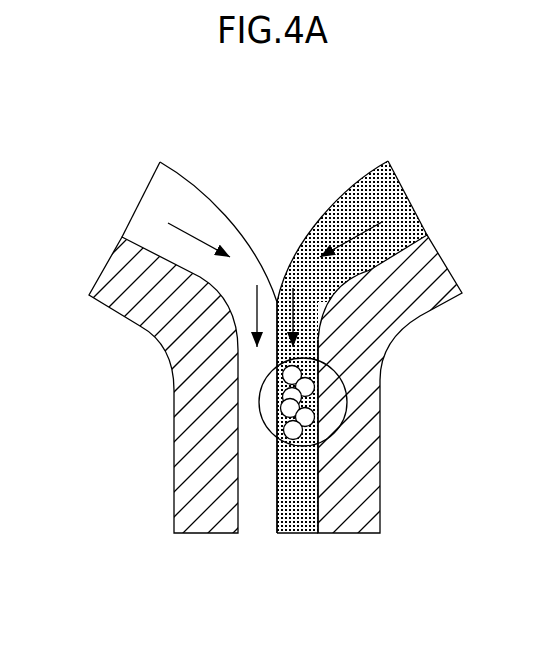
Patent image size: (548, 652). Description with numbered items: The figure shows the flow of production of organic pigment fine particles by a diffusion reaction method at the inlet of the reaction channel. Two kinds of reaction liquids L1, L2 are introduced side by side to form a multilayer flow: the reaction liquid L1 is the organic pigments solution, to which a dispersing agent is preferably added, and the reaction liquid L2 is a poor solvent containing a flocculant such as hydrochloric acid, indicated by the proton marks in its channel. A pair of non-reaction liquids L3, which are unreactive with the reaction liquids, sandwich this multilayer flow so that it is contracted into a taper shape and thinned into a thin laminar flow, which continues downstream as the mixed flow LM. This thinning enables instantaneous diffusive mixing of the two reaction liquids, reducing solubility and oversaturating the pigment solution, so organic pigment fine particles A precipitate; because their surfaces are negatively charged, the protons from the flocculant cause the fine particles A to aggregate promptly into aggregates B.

The reaction liquid L1 is at (137, 192).
The reaction liquid L2 is at (412, 192).
The non-reaction liquid L3 is at (108, 262).
The mixed liquid channel LM is at (278, 533).
The organic pigment fine particles A is at (322, 366).
The aggregates B is at (273, 410).